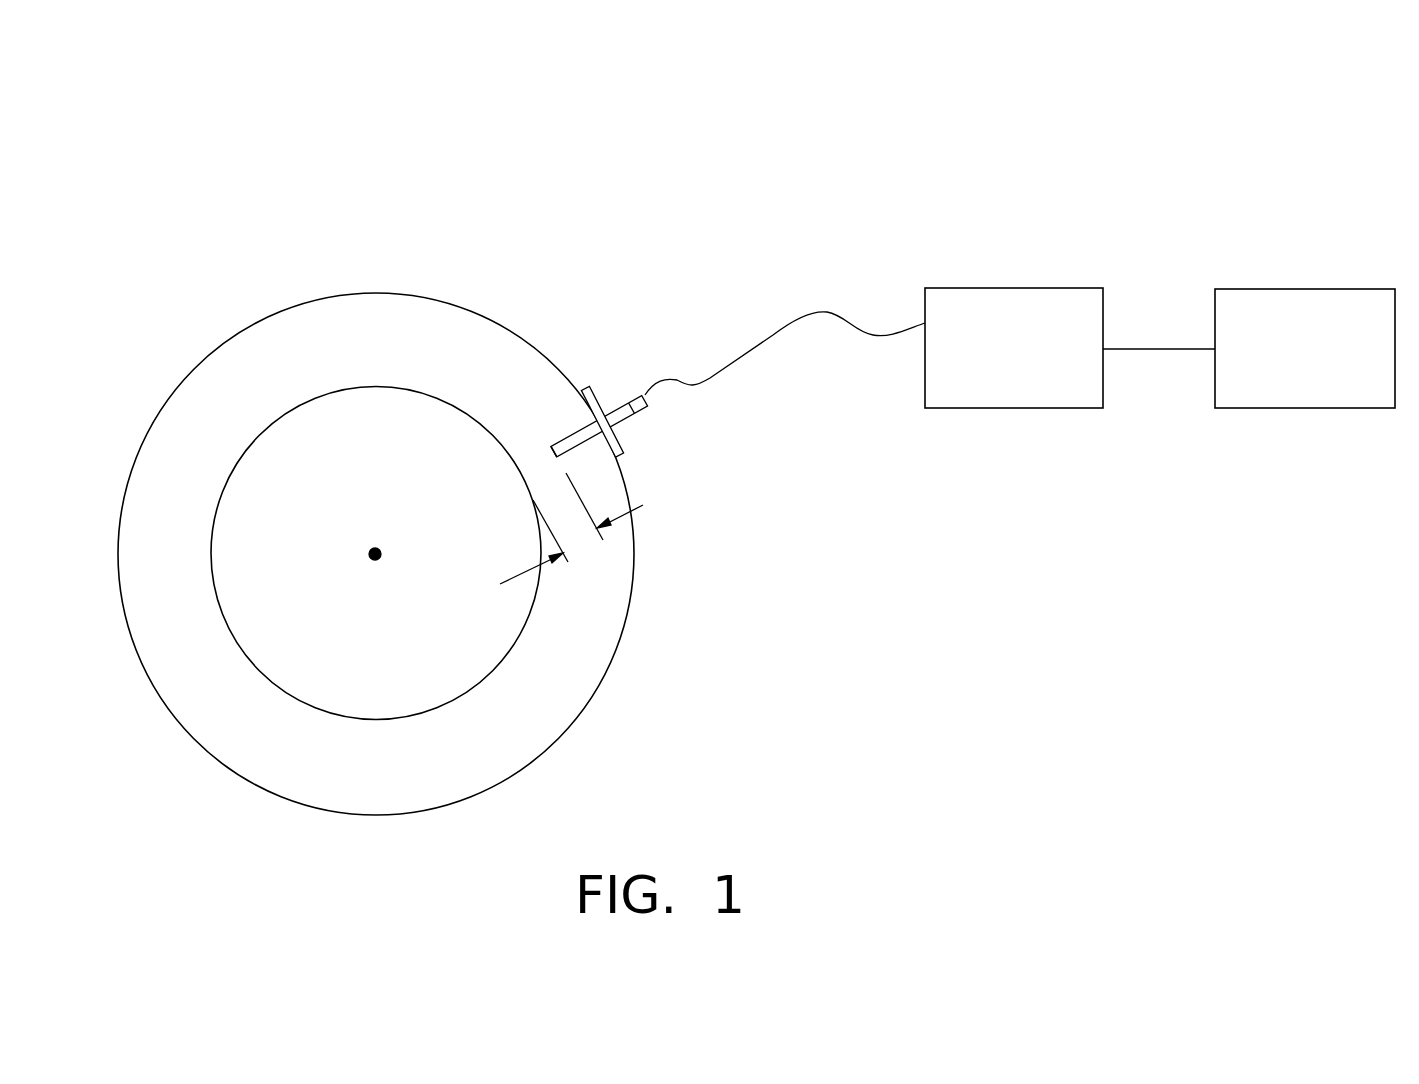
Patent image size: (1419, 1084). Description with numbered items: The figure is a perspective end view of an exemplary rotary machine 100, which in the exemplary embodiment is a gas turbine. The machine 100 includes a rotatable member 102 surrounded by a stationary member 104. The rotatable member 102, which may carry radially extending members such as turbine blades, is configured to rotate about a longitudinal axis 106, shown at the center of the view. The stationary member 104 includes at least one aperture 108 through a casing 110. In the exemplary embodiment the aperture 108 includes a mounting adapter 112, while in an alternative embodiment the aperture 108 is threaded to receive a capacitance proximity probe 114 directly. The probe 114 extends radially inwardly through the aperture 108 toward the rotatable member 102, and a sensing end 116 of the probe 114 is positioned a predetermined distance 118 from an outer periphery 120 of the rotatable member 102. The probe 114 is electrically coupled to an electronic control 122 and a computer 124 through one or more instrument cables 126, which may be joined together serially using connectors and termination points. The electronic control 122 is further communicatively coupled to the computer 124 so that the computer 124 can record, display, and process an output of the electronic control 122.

The rotary machine 100 is at (247, 146).
The rotatable member 102 is at (376, 515).
The stationary member 104 is at (335, 293).
The longitudinal axis 106 is at (381, 559).
The aperture 108 is at (603, 430).
The casing 110 is at (622, 477).
The mounting adapter 112 is at (618, 400).
The capacitance proximity probe 114 is at (647, 405).
The sensing end 116 is at (551, 448).
The predetermined distance 118 is at (498, 578).
The outer periphery 120 is at (492, 672).
The electronic control 122 is at (1015, 287).
The computer 124 is at (1290, 288).
The instrument cables 126 is at (770, 335).